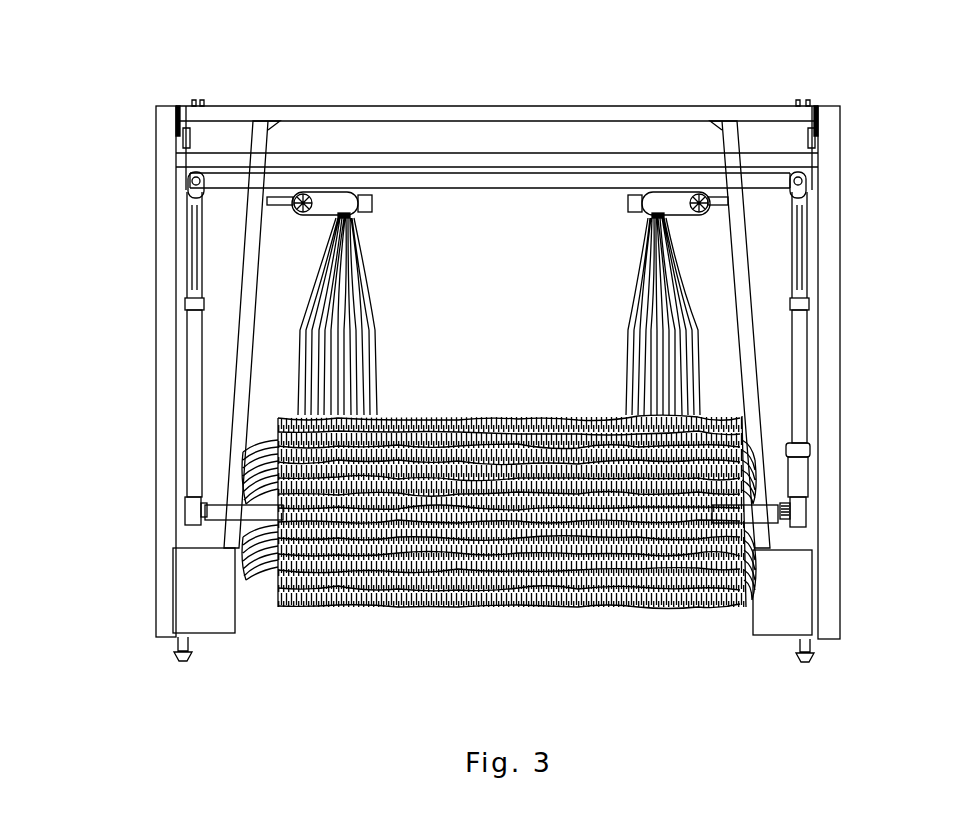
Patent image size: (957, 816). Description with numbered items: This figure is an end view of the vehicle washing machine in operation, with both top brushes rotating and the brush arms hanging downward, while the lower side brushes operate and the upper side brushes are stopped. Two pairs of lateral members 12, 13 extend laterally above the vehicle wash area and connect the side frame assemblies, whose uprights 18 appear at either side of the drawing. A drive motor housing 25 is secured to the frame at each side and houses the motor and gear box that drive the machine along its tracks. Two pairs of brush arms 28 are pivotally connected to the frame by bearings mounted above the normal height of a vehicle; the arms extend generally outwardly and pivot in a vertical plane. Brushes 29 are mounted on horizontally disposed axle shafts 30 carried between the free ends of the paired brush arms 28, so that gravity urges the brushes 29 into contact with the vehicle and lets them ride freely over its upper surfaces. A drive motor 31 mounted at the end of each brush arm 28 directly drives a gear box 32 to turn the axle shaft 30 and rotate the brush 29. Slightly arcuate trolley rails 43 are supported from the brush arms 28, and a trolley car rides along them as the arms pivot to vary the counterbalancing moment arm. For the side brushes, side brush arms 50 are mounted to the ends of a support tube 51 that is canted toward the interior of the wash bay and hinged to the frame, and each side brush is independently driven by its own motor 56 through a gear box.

The lateral member 12 is at (555, 113).
The lateral member 13 is at (606, 162).
The upright post 18 is at (163, 404).
The drive motor housing 25 is at (192, 592).
The brush arm 28 is at (192, 465).
The brush 29 is at (663, 568).
The axle shaft 30 is at (743, 512).
The drive motor 31 is at (798, 472).
The gear box 32 is at (797, 512).
The trolley rail 43 is at (195, 272).
The side brush arm 50 is at (290, 205).
The support tube 51 is at (247, 357).
The motor 56 is at (322, 198).